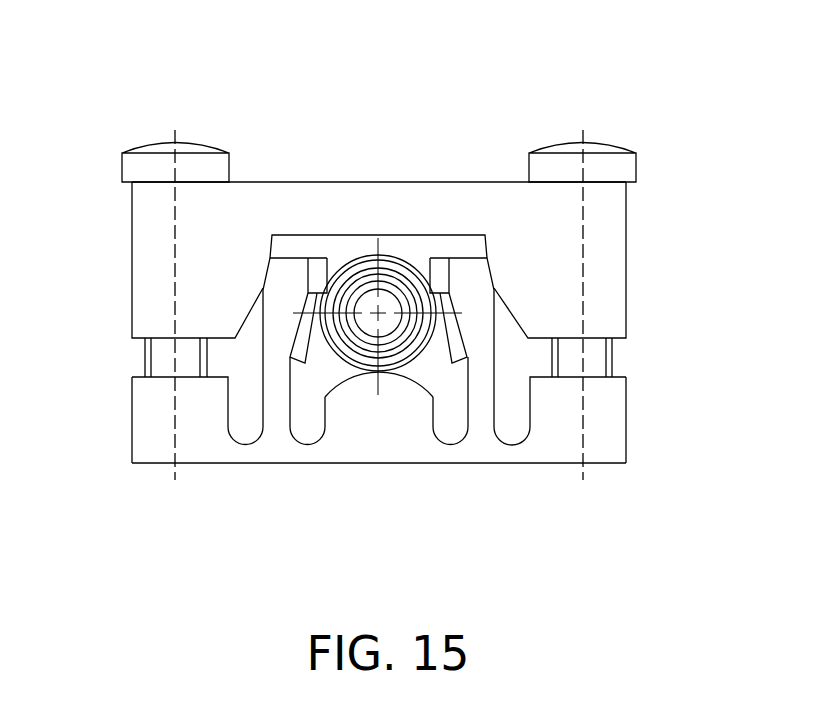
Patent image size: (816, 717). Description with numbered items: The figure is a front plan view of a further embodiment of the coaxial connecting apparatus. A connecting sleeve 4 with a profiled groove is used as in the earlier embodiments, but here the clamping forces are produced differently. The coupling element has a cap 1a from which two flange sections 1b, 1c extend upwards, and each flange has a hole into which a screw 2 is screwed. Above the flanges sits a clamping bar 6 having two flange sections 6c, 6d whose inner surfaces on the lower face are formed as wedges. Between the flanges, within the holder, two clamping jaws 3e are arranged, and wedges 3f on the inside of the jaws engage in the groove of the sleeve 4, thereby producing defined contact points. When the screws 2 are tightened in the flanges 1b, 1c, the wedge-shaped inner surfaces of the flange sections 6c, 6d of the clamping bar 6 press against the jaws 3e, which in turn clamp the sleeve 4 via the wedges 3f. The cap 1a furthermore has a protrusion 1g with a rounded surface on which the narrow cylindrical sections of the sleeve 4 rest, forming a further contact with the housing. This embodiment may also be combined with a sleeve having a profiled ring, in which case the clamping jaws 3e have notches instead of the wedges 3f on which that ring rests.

The cap area 1a is at (392, 447).
The flange section 1b is at (142, 428).
The flange section 1c is at (620, 422).
The protrusion 1g is at (351, 405).
The screw 2 is at (195, 142).
The clamping jaw 3e is at (280, 292).
The wedge 3f is at (303, 340).
The connecting sleeve 4 is at (405, 255).
The clamping bar 6 is at (369, 180).
The flange section 6c is at (143, 295).
The flange section 6d is at (615, 281).